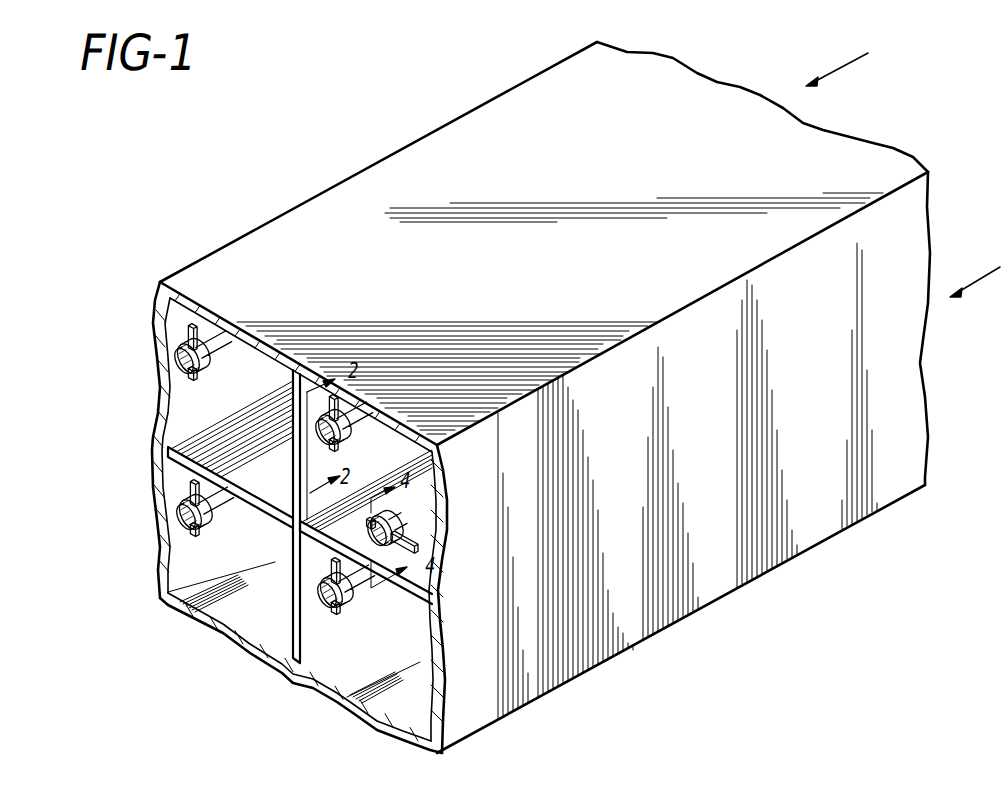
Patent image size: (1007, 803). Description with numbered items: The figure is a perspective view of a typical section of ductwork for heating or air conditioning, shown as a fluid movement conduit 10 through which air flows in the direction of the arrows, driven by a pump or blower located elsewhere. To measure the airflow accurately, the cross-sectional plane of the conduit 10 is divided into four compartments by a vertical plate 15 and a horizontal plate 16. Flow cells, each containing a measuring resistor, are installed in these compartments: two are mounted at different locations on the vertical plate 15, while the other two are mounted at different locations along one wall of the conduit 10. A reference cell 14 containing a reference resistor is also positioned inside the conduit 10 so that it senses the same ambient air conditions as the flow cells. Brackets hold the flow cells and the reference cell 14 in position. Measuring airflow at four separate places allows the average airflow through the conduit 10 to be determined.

The fluid movement conduit 10 is at (291, 201).
The reference cell 14 is at (413, 519).
The vertical plate 15 is at (295, 604).
The horizontal plate 16 is at (194, 438).